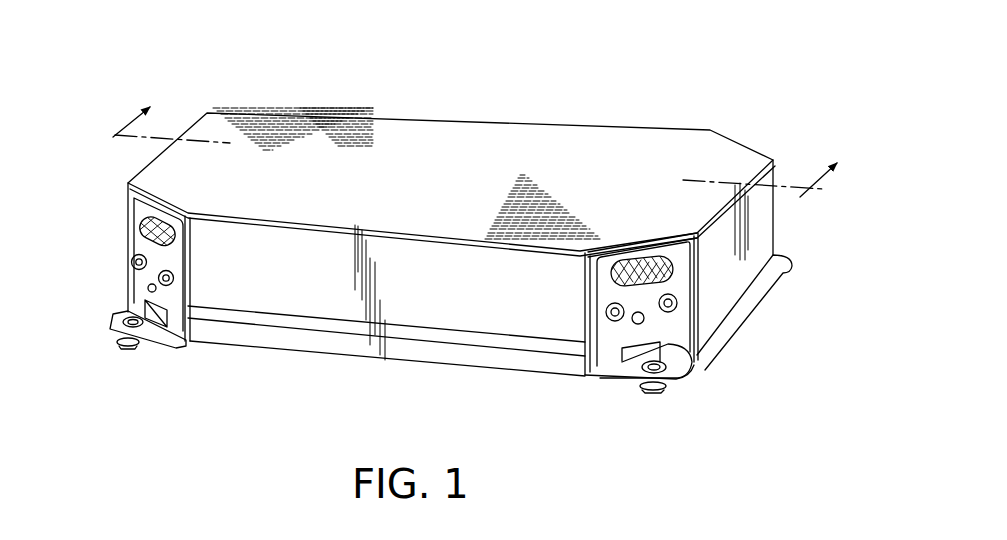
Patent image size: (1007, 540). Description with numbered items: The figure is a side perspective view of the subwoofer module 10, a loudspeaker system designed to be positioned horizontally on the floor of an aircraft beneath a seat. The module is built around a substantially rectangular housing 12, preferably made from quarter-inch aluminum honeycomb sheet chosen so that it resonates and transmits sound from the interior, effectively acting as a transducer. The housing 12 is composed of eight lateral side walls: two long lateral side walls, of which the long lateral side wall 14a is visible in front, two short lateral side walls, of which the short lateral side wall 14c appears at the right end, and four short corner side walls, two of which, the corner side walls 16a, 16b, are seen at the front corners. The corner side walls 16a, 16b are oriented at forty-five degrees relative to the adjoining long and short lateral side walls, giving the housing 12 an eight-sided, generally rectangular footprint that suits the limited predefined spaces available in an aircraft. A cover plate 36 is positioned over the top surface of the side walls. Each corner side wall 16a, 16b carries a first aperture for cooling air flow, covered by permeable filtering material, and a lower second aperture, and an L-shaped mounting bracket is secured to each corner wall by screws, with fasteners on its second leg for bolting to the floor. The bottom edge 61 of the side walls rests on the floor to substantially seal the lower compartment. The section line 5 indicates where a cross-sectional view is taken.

The subwoofer module 10 is at (253, 78).
The housing 12 is at (599, 122).
The cover plate 36 is at (464, 132).
The long lateral side wall 14a is at (462, 313).
The short lateral side wall 14c is at (745, 268).
The bottom edge 61 is at (336, 358).
The short corner side wall 16a is at (728, 328).
The short corner side wall 16b is at (128, 193).
The section line 5- 5 is at (475, 150).